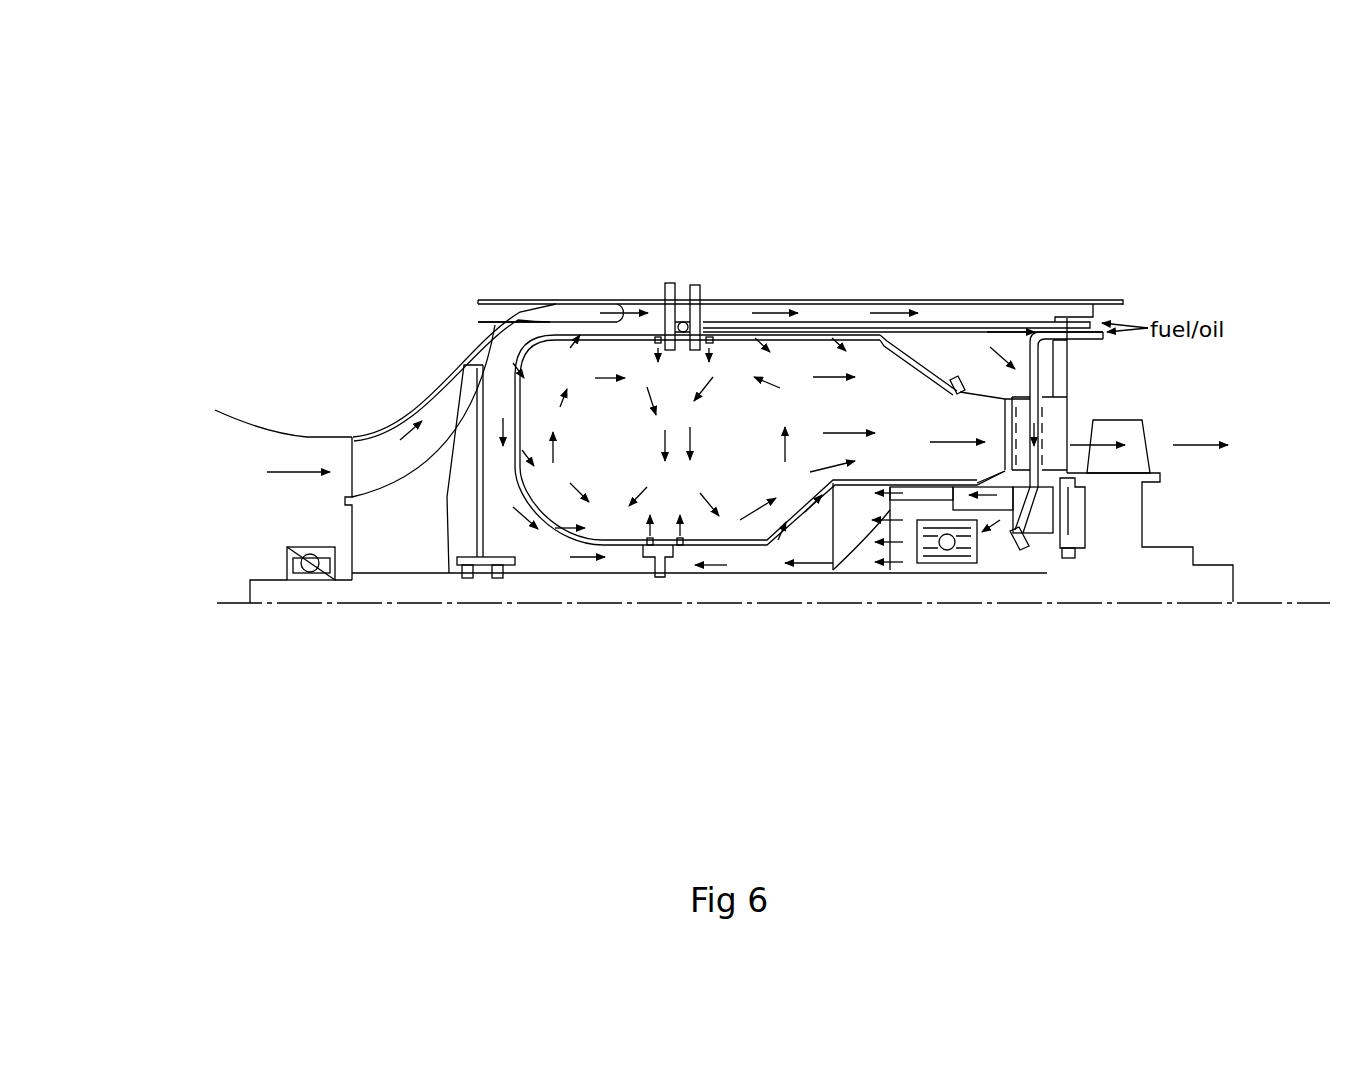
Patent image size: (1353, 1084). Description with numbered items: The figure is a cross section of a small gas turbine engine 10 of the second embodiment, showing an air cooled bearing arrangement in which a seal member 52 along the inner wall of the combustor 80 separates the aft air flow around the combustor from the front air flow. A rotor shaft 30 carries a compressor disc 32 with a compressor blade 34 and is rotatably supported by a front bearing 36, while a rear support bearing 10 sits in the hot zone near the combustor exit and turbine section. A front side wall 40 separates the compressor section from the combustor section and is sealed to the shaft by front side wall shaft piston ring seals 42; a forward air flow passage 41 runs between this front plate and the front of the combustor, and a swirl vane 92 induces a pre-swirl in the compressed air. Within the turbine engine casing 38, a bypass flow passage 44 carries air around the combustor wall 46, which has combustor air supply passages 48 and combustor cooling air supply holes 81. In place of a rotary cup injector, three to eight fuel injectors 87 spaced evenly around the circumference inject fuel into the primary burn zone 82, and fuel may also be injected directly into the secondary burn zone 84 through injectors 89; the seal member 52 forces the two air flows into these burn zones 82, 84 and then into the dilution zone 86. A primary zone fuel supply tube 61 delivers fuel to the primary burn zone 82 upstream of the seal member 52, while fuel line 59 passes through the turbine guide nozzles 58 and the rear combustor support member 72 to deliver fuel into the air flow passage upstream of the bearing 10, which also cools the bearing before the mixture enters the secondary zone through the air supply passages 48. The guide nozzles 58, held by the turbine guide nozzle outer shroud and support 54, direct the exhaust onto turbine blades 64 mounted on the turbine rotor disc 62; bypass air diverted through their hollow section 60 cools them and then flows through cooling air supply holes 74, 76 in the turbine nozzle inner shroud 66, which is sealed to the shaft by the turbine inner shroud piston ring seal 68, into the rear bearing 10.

The rear support bearing 10 is at (945, 550).
The rotor shaft 30 is at (855, 595).
The compressor disc 32 is at (357, 517).
The compressor blade 34 is at (377, 440).
The front bearing 36 is at (280, 563).
The turbine engine casing 38 is at (735, 302).
The front side wall 40 is at (482, 427).
The forward air flow passage 41 is at (508, 480).
The front side wall shaft piston ring seals 42 is at (502, 570).
The bypass flow passage 44 is at (807, 313).
The combustor wall 46 is at (865, 338).
The combustor air supply passages 48 is at (706, 297).
The seal member 52 is at (668, 550).
The turbine guide nozzle outer shroud and support 54 is at (1062, 375).
The turbine guide nozzle 58 is at (1053, 422).
The fuel line 59 is at (1042, 337).
The hollow section 60 is at (1015, 396).
The fuel line 61 is at (1003, 332).
The turbine rotor disc 62 is at (1122, 507).
The turbine blade 64 is at (1132, 428).
The turbine nozzle inner shroud 66 is at (1055, 515).
The turbine inner shroud piston ring seal 68 is at (1066, 552).
The rear combustor support member 72 is at (900, 505).
The cooling air supply hole 74 is at (1003, 548).
The cooling air supply hole 76 is at (1041, 535).
The combustor 80 is at (832, 424).
The combustor cooling air supply holes 81 is at (533, 361).
The primary burn zone 82 is at (589, 420).
The secondary burn zone 84 is at (725, 448).
The dilution zone 86 is at (904, 426).
The fuel injectors 87 is at (661, 335).
The injectors 89 is at (695, 283).
The swirl vane 92 is at (683, 320).